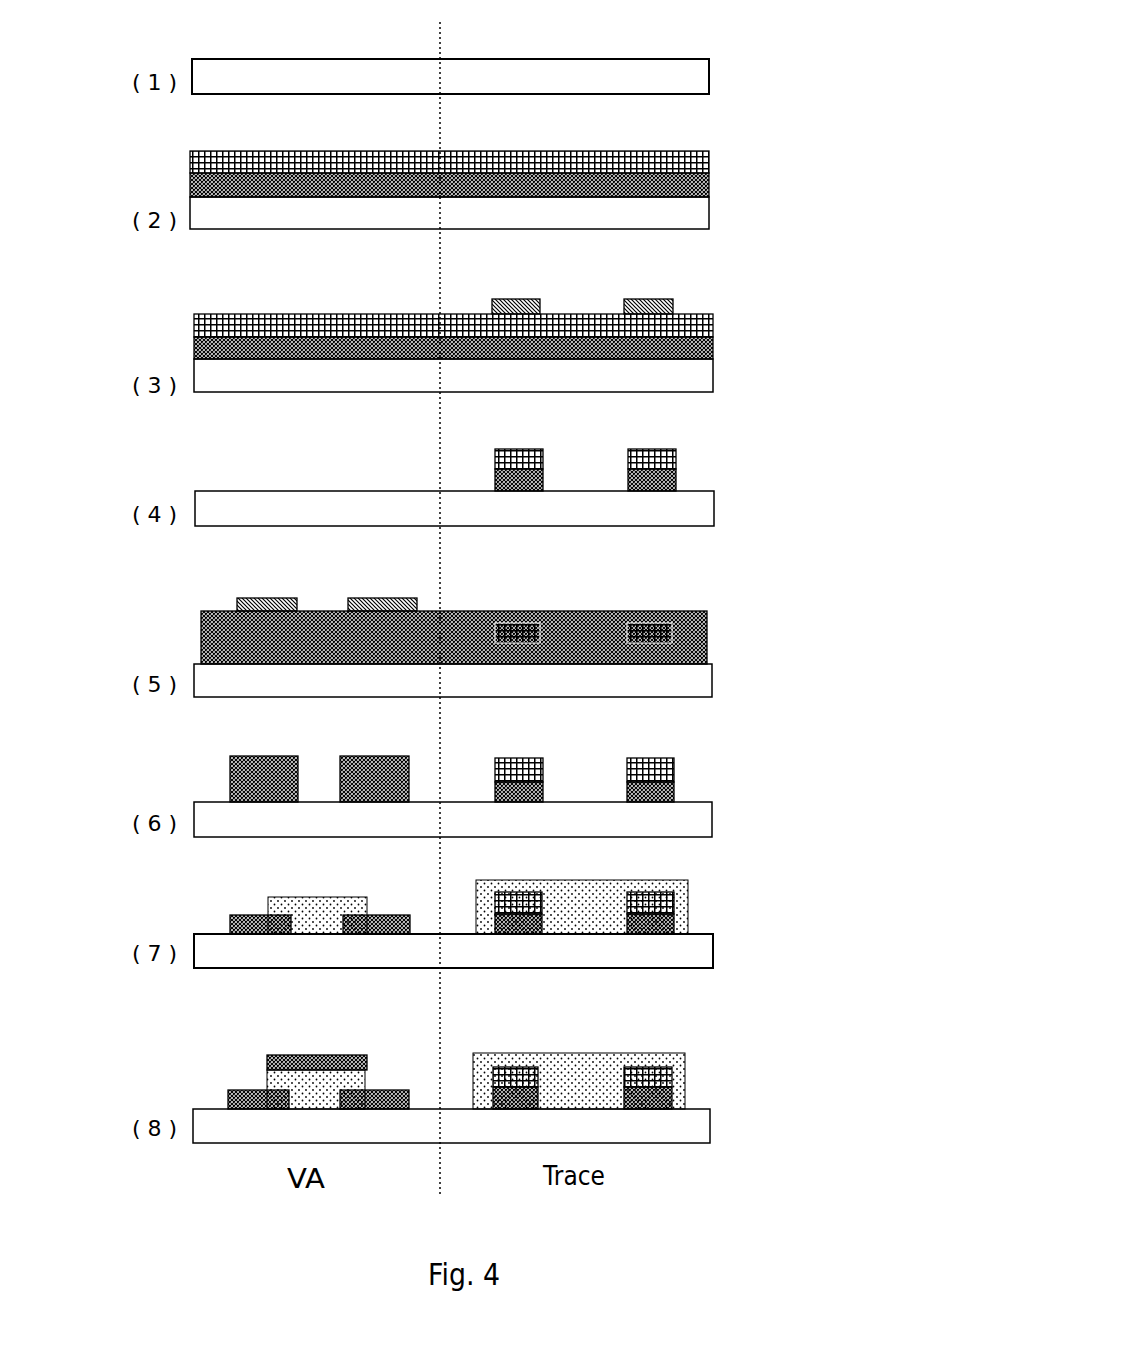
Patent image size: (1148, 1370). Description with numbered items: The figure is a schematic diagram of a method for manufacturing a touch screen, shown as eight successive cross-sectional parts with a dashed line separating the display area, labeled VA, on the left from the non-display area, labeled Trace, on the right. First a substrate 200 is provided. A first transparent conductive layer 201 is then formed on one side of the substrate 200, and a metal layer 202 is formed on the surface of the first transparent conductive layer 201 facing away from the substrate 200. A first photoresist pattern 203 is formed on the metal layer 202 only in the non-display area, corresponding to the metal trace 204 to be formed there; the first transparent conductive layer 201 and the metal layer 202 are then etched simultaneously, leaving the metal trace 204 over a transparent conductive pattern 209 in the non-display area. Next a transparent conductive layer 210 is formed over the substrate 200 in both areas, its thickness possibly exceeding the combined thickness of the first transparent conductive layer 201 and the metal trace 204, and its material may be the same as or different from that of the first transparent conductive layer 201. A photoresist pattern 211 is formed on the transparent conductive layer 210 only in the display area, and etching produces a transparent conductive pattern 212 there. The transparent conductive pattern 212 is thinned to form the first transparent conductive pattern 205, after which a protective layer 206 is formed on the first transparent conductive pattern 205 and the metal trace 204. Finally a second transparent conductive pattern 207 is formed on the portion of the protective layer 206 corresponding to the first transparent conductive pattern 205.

The substrate 200 is at (709, 59).
The first transparent conductive layer 201 is at (709, 190).
The metal layer 202 is at (709, 155).
The first photoresist pattern 203 is at (673, 299).
The metal trace 204 is at (676, 449).
The first transparent conductive pattern 205 is at (230, 915).
The protective layer 206 is at (688, 880).
The second transparent conductive pattern 207 is at (267, 1057).
The transparent conductive pattern 209 is at (674, 797).
The transparent conductive layer 210 is at (707, 613).
The photoresist pattern 211 is at (237, 600).
The transparent conductive pattern 212 is at (230, 757).